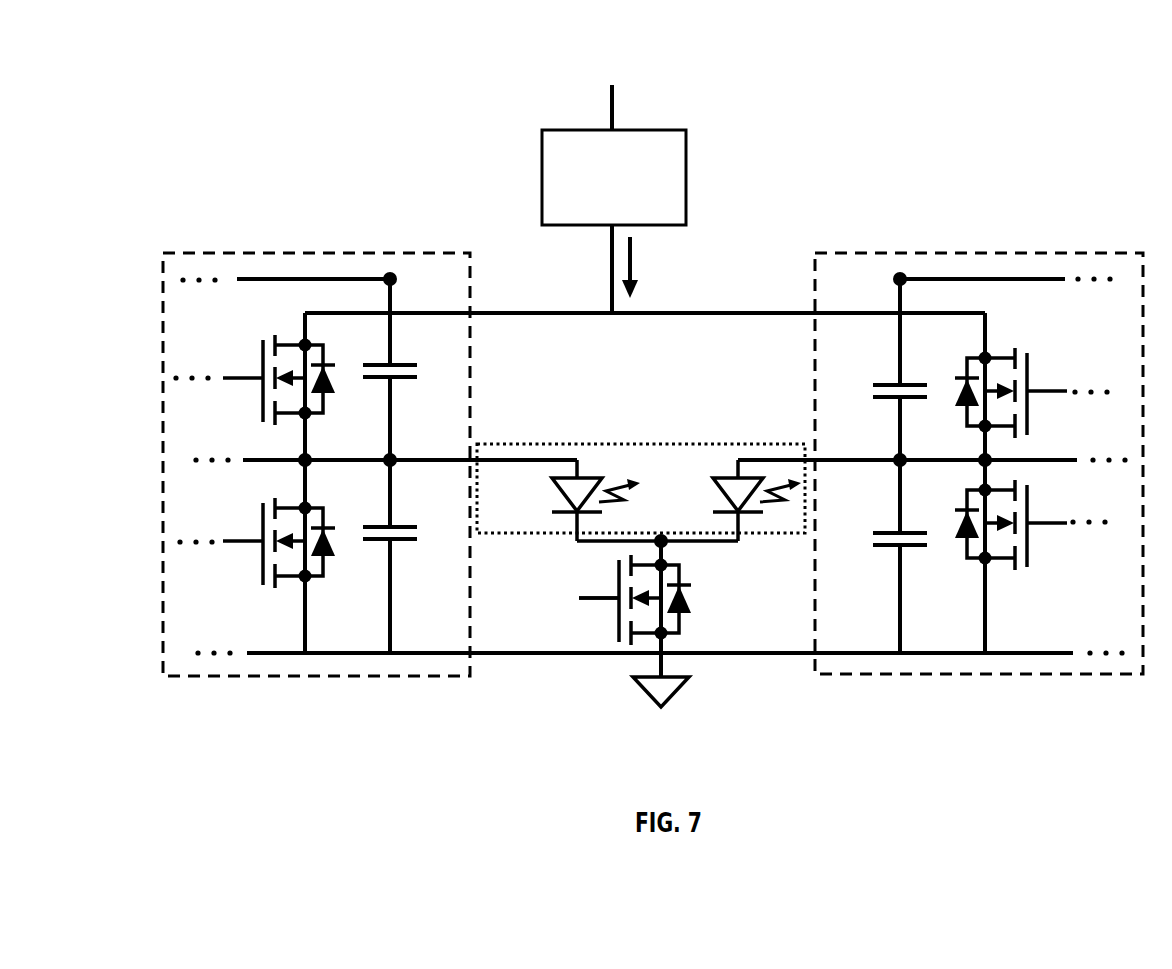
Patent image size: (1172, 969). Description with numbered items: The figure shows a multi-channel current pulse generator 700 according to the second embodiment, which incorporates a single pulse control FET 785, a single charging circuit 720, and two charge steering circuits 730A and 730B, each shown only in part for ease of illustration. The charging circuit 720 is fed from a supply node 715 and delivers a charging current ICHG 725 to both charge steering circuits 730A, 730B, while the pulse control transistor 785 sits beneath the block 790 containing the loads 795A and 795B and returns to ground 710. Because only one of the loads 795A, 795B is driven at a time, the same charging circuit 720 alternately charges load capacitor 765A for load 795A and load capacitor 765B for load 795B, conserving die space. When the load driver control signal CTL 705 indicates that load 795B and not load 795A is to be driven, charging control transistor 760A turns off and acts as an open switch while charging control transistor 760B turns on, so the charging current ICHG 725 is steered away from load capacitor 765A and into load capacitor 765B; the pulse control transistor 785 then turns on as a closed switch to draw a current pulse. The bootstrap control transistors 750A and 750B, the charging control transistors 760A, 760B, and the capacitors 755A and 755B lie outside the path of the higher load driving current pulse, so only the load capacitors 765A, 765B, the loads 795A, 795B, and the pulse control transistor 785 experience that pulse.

The multi-channel current pulse generator 700 is at (896, 61).
The load driver control signal CTL 705 is at (558, 602).
The ground 710 is at (678, 692).
The supply voltage Vsupply 715 is at (598, 87).
The charging circuit 720 is at (686, 178).
The charging current ICHG 725 is at (679, 267).
The charge steering circuit 730A is at (960, 252).
The charge steering circuit 730B is at (268, 252).
The bootstrap control transistor 750A is at (1011, 556).
The bootstrap control transistor 750B is at (278, 556).
The upper capacitor A 755A is at (877, 366).
The upper capacitor B 755B is at (410, 366).
The charging control transistor 760A is at (1011, 388).
The charging control transistor 760B is at (277, 386).
The load capacitor 765A is at (874, 553).
The load capacitor 765B is at (410, 553).
The pulse control transistor 785 is at (663, 593).
The optocoupler / light emitting block 790 is at (553, 445).
The load 795A is at (724, 500).
The load 795B is at (572, 500).